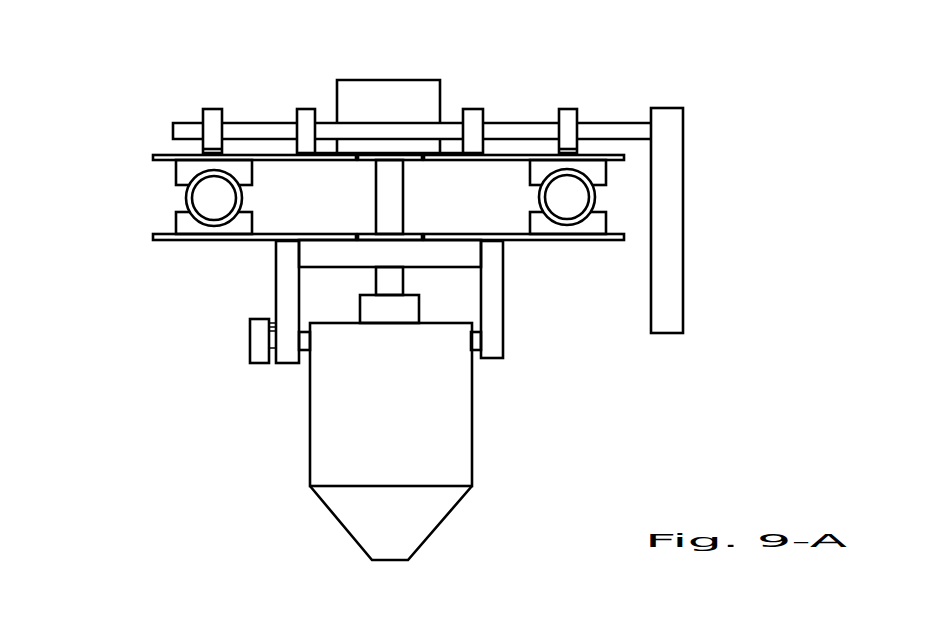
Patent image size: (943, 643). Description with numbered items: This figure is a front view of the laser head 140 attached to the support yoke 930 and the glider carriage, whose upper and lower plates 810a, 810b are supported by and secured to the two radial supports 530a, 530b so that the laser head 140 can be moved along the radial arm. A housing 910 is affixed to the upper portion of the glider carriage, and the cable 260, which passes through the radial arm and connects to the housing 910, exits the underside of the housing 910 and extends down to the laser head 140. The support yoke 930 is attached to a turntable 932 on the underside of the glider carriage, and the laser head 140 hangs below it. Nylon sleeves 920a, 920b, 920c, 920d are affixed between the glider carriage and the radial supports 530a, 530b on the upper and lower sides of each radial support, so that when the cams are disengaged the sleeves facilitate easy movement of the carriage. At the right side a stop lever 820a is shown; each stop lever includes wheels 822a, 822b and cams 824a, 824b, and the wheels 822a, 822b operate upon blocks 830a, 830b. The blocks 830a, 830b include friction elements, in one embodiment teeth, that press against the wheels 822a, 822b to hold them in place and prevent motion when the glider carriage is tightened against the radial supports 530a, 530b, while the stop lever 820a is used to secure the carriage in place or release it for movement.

The laser head 140 is at (472, 423).
The cable 260 is at (373, 193).
The radial support 530a is at (605, 197).
The radial support 530b is at (184, 202).
The glider carriage 810a is at (153, 155).
The glider carriage 810b is at (153, 240).
The stop lever 820a is at (683, 293).
The wheel 822a is at (568, 109).
The wheel 822b is at (214, 109).
The cam 824a is at (472, 109).
The cam 824b is at (305, 109).
The block 830a is at (578, 152).
The block 830b is at (203, 150).
The housing 910 is at (402, 80).
The nylon sleeve 920a is at (607, 222).
The nylon sleeve 920b is at (176, 228).
The nylon sleeve 920c is at (607, 168).
The nylon sleeve 920d is at (176, 170).
The support yoke 930 is at (216, 302).
The turntable 932 is at (456, 268).